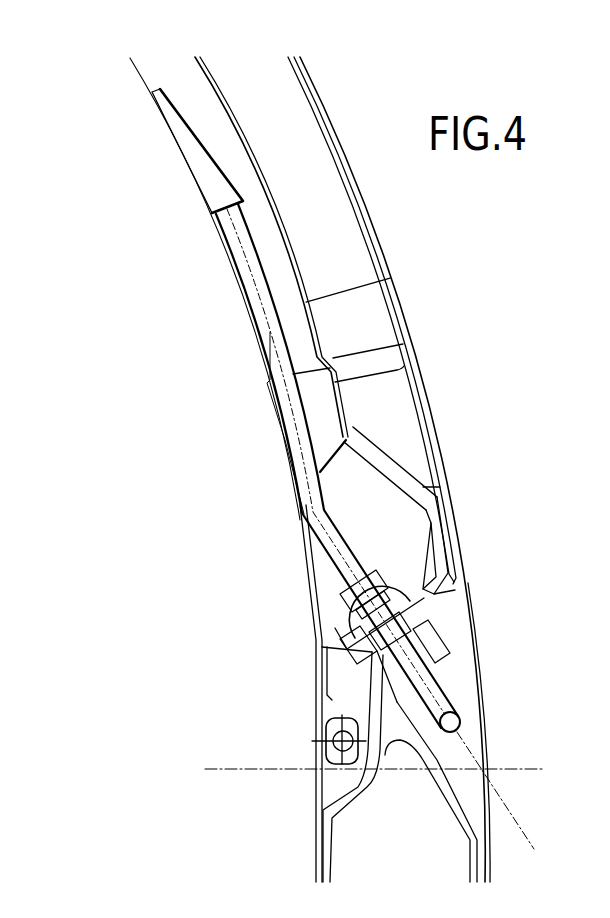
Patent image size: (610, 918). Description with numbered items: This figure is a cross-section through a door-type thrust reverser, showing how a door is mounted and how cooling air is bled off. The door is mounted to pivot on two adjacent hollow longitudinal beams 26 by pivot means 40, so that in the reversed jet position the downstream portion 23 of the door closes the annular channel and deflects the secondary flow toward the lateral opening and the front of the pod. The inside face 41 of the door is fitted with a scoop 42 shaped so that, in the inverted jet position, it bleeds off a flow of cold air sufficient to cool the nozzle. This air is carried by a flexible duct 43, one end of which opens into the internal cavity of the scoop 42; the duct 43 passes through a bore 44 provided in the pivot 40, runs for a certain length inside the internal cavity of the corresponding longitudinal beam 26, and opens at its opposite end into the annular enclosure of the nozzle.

The downstream portion of the door 23 is at (387, 410).
The longitudinal beam 26 is at (442, 792).
The pivot means 40 is at (440, 594).
The inside face of the door 41 is at (133, 65).
The scoop 42 is at (208, 185).
The flexible duct 43 is at (270, 332).
The bore 44 is at (413, 623).